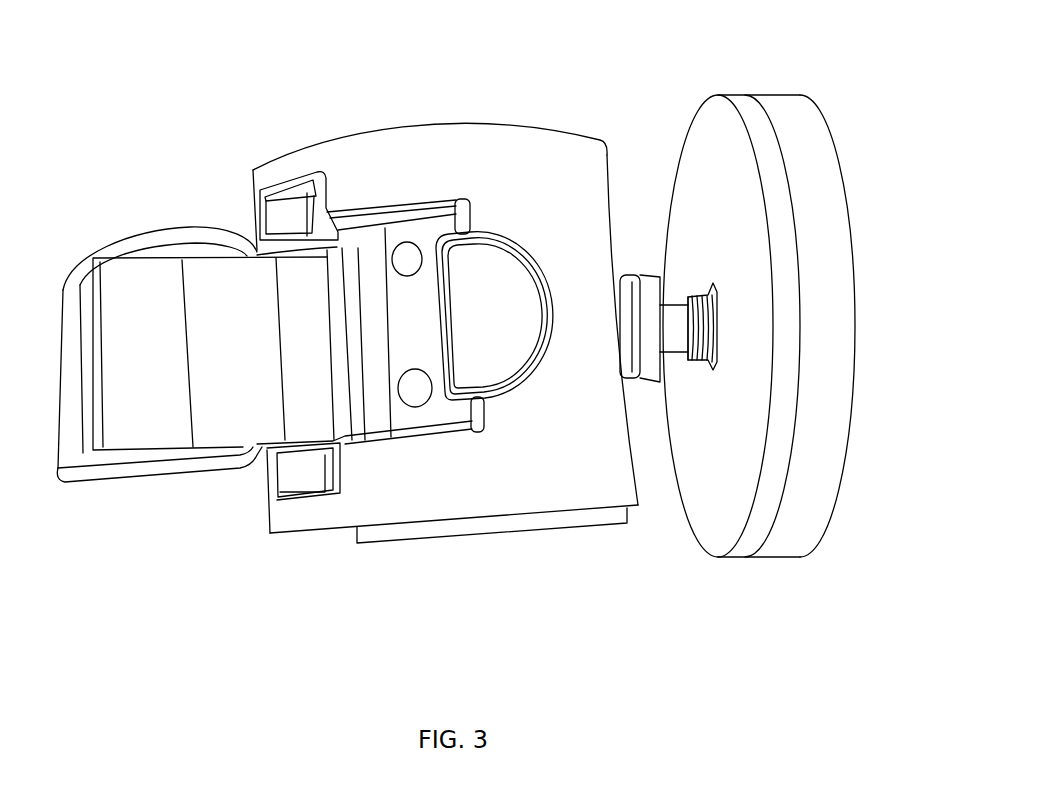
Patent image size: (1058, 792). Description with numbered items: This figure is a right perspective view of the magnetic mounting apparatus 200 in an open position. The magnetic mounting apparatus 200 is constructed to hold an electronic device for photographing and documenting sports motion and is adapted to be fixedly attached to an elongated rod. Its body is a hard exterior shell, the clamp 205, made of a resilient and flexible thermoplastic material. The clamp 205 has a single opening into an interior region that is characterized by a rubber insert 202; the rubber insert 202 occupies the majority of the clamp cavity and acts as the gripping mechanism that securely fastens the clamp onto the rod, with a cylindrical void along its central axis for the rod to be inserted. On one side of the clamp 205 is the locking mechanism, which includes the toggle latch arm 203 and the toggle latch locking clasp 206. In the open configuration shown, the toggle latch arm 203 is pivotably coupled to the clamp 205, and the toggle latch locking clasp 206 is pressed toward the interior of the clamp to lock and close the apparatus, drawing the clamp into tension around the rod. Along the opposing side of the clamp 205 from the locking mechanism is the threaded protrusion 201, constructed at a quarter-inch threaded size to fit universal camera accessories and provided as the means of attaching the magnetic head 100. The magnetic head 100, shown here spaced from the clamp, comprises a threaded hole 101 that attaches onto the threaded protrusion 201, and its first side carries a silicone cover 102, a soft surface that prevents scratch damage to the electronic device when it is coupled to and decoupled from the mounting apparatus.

The magnetic head 100 is at (813, 303).
The threaded hole 101 is at (707, 362).
The silicone cover 102 is at (858, 311).
The magnetic mounting apparatus 200 is at (378, 354).
The threaded protrusion 201 is at (683, 300).
The rubber insert 202 is at (543, 520).
The toggle latch arm 203 is at (73, 483).
The clamp 205 is at (425, 153).
The toggle latch locking clasp 206 is at (217, 427).